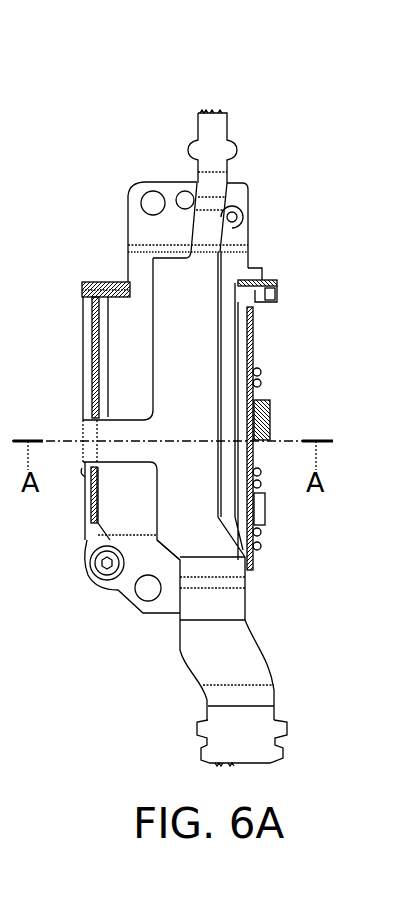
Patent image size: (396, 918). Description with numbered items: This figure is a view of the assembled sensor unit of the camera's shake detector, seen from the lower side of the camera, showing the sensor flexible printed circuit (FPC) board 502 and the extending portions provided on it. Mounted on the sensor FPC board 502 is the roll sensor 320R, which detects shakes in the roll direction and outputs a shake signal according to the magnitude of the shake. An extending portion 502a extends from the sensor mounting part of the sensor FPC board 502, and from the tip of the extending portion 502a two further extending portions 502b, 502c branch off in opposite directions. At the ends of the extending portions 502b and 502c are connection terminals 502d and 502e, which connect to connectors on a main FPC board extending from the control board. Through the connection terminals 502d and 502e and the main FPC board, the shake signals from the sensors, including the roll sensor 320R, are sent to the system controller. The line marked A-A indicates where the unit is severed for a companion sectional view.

The sensor flexible printed circuit (FPC) board 502 is at (195, 470).
The extending portion 502a is at (135, 428).
The extending portion 502b is at (192, 538).
The extending portion 502c is at (205, 348).
The connection terminal 502d is at (258, 743).
The connection terminal 502e is at (223, 122).
The roll sensor 320R is at (270, 413).